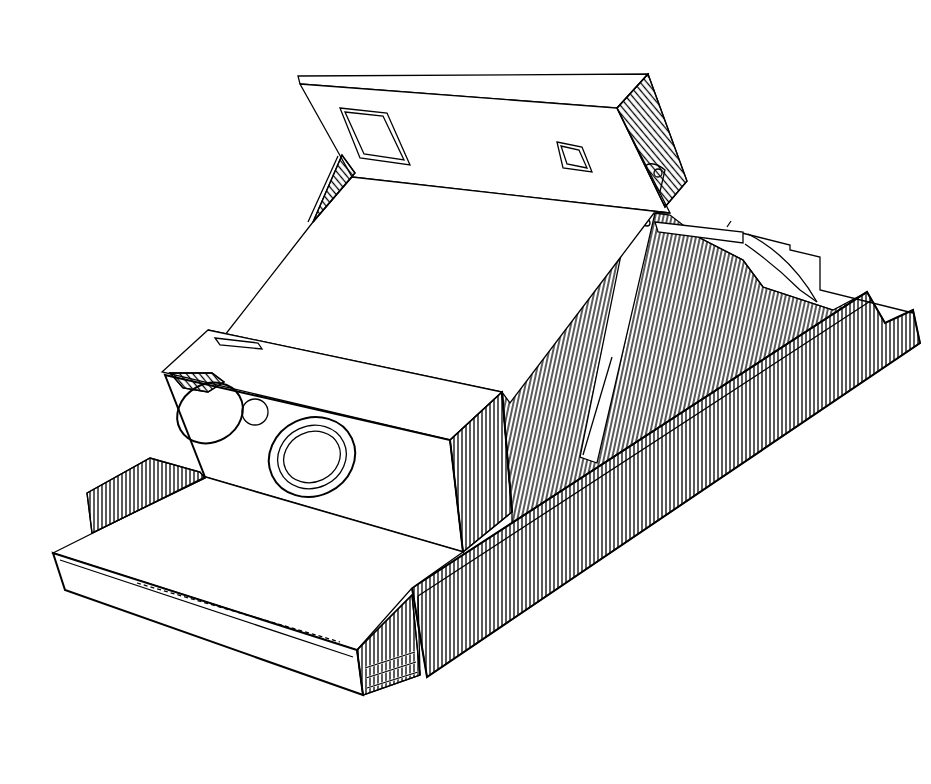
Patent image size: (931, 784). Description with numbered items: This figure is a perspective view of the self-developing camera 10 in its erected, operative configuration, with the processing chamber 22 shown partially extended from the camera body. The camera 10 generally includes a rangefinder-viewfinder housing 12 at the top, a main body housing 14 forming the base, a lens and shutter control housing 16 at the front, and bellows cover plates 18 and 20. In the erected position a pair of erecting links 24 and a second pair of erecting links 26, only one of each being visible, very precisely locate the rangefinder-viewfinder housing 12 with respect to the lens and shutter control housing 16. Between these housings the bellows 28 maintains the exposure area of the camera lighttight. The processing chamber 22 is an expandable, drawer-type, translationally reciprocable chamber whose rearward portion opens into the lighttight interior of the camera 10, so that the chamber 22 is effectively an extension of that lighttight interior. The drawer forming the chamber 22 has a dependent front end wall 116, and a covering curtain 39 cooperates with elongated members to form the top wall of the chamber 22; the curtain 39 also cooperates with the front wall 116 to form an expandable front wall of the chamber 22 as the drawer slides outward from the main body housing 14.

The camera 10 is at (273, 222).
The rangefinder-viewfinder housing 12 is at (545, 78).
The main body housing 14 is at (512, 598).
The lens and shutter control housing 16 is at (193, 357).
The bellows cover plate 18 is at (325, 237).
The bellows cover plate 20 is at (736, 248).
The processing chamber 22 is at (337, 690).
The erecting link 24 is at (612, 448).
The erecting link 26 is at (818, 268).
The bellows 28 is at (687, 388).
The covering curtain 39 is at (283, 568).
The front end wall 116 is at (202, 623).